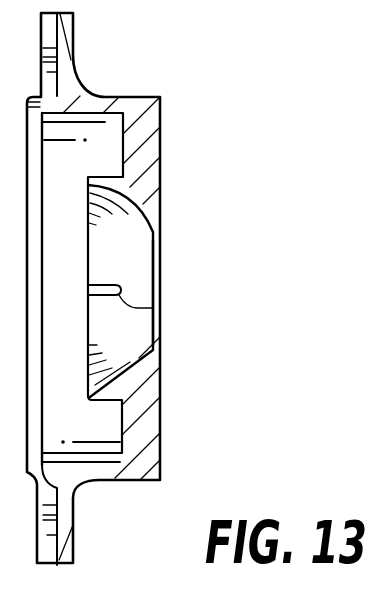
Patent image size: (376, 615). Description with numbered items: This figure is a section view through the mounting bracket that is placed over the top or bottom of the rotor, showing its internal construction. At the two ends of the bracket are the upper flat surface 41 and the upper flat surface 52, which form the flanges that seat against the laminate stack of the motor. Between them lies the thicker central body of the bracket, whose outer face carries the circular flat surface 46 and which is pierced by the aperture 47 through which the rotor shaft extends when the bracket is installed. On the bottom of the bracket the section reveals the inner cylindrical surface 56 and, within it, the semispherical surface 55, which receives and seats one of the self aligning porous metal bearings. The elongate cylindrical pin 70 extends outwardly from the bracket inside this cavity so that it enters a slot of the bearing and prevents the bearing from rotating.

The upper flat surface 41 is at (75, 36).
The circular flat surface 46 is at (163, 181).
The aperture 47 is at (155, 238).
The upper flat surface 52 is at (75, 537).
The semispherical surface 55 is at (112, 258).
The inner cylindrical surface 56 is at (104, 147).
The elongate cylindrical pin 70 is at (153, 309).